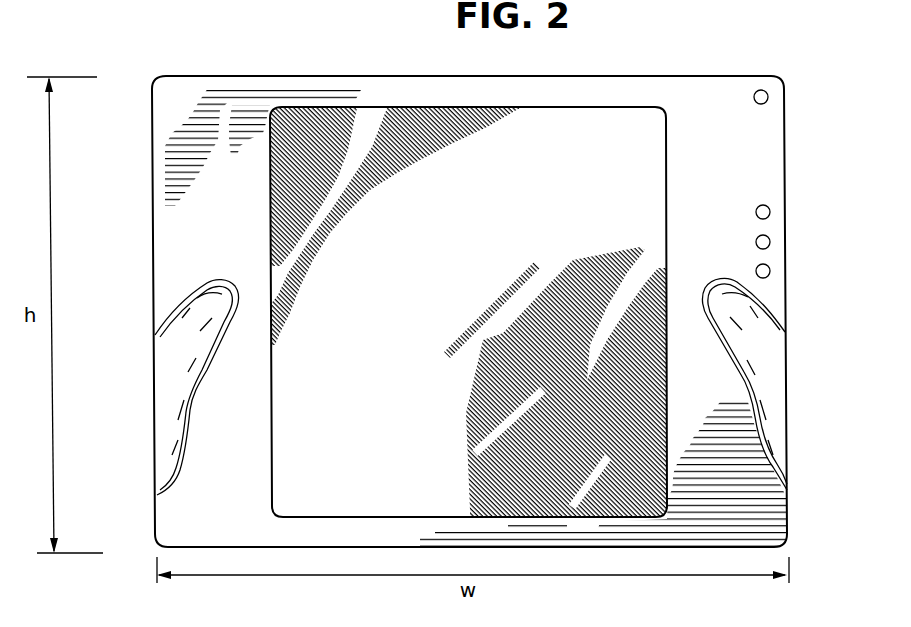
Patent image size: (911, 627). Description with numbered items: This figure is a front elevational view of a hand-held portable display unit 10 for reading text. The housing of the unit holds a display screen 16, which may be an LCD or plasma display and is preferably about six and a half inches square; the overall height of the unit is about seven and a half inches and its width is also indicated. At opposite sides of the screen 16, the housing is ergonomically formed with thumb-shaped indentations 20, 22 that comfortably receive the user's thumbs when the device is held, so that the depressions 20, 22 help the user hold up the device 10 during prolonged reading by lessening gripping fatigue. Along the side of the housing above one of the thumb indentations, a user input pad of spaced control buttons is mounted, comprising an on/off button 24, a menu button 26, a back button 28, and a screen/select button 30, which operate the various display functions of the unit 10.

The hand-held portable display unit 10 is at (665, 58).
The display screen 16 is at (430, 349).
The thumb-shaped indentation 20 is at (180, 362).
The thumb-shaped indentation 22 is at (768, 360).
The on/off button 24 is at (767, 93).
The menu button 26 is at (770, 210).
The back button 28 is at (770, 241).
The screen/select button 30 is at (770, 271).